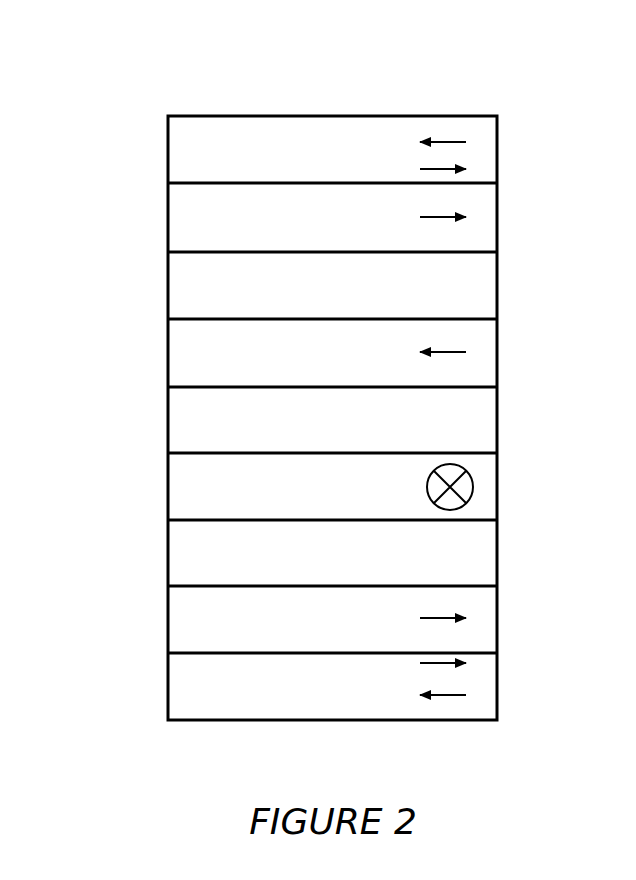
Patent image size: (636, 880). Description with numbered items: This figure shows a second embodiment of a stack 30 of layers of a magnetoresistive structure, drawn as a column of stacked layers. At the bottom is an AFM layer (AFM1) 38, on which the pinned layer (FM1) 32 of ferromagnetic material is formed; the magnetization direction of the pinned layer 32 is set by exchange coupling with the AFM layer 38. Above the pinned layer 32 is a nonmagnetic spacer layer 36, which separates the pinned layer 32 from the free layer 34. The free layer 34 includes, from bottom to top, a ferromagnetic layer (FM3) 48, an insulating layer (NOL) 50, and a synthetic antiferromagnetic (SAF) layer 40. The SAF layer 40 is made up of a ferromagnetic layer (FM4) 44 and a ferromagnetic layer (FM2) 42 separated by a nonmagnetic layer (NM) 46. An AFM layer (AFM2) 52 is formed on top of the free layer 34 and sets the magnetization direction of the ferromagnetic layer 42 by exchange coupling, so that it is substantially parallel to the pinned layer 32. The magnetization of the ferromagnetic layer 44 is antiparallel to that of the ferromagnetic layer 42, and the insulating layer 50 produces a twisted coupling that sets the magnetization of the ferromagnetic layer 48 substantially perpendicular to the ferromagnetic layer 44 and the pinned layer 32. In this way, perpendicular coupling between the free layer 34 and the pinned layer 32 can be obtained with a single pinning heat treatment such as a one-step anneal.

The stack 30 is at (291, 63).
The AFM layer (AFM2) 52 is at (487, 154).
The ferromagnetic layer (FM2) 42 is at (258, 233).
The nonmagnetic layer (NM) 46 is at (208, 302).
The ferromagnetic layer (FM4) 44 is at (208, 370).
The synthetic antiferromagnetic (SAF) layer 40 is at (166, 186).
The free layer 34 is at (505, 505).
The insulating layer (NOL) 50 is at (190, 421).
The ferromagnetic layer (FM3) 48 is at (190, 489).
The nonmagnetic spacer layer 36 is at (480, 556).
The pinned layer (FM1) 32 is at (485, 621).
The AFM layer (AFM1) 38 is at (480, 689).